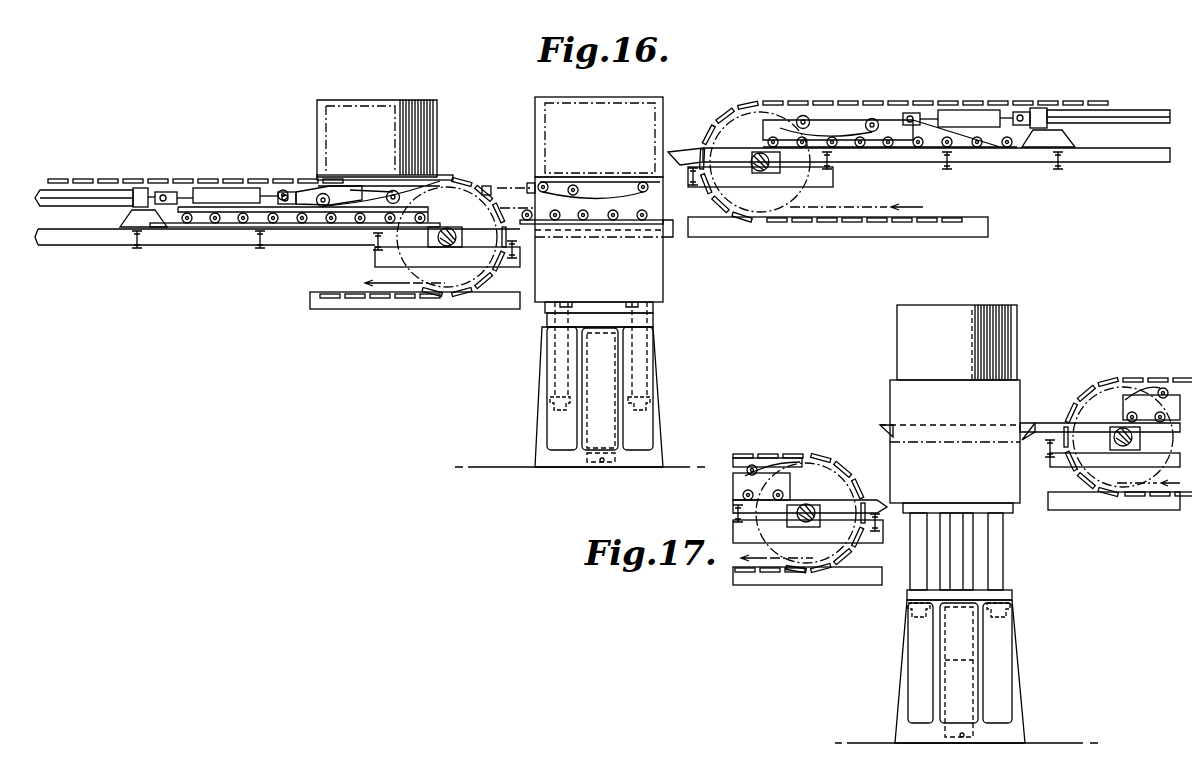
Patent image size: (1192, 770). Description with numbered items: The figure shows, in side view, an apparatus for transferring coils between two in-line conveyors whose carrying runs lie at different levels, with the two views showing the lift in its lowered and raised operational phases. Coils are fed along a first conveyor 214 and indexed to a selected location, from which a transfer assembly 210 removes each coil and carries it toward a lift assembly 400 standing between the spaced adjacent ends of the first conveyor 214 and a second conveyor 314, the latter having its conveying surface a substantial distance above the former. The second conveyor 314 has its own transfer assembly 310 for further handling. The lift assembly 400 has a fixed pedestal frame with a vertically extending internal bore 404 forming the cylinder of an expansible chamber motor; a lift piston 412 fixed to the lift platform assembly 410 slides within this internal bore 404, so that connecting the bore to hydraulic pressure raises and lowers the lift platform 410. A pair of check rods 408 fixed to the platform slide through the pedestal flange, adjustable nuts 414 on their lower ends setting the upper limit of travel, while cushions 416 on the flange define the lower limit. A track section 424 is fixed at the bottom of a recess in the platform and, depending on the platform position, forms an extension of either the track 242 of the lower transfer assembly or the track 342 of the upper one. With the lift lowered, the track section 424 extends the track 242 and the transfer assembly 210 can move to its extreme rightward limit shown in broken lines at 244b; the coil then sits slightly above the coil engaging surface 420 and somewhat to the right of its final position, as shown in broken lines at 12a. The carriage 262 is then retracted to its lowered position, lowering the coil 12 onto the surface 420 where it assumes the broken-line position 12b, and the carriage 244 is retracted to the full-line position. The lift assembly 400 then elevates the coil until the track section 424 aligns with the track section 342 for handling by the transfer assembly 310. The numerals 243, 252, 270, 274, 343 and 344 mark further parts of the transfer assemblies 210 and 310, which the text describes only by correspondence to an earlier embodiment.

In FIG. 17, the coil 12 is at (1017, 319).
In FIG. 16, the coil position 12a is at (664, 107).
In FIG. 16, the coil position 12b is at (630, 99).
In FIG. 16, the transfer assembly 210 is at (260, 222).
In FIG. 17, the transfer assembly 210 is at (725, 491).
In FIG. 16, the first conveyor 214 is at (188, 173).
In FIG. 17, the first conveyor 214 is at (772, 446).
In FIG. 16, the track 242 is at (302, 236).
In FIG. 17, the track 242 is at (880, 518).
In FIG. 16, the track 243 is at (200, 228).
In FIG. 17, the track 243 is at (870, 499).
In FIG. 16, the carriage 244 is at (349, 222).
In FIG. 16, the carriage position 244b is at (655, 206).
In FIG. 16, the rail 252 is at (96, 190).
In FIG. 16, the carriage 262 is at (338, 186).
In FIG. 16, the pivot link 270 is at (297, 182).
In FIG. 16, the cylinder 274 is at (224, 189).
In FIG. 16, the transfer assembly 310 is at (937, 147).
In FIG. 17, the transfer assembly 310 is at (1156, 386).
In FIG. 16, the second conveyor 314 is at (982, 101).
In FIG. 17, the second conveyor 314 is at (1131, 369).
In FIG. 16, the track 342 is at (869, 163).
In FIG. 17, the track 342 is at (1047, 435).
In FIG. 16, the rail end 343 is at (697, 151).
In FIG. 17, the rail end 343 is at (1053, 422).
In FIG. 16, the carriage frame 344 is at (767, 132).
In FIG. 16, the lift assembly 400 is at (666, 349).
In FIG. 17, the lift assembly 400 is at (1028, 649).
In FIG. 16, the internal bore 404 is at (612, 429).
In FIG. 17, the internal bore 404 is at (970, 691).
In FIG. 16, the check rods 408 is at (556, 362).
In FIG. 17, the check rods 408 is at (1003, 533).
In FIG. 16, the lift platform assembly 410 is at (612, 276).
In FIG. 17, the lift platform assembly 410 is at (970, 414).
In FIG. 16, the lift piston 412 is at (600, 376).
In FIG. 17, the lift piston 412 is at (973, 559).
In FIG. 16, the adjustable nuts 414 is at (550, 408).
In FIG. 17, the adjustable nuts 414 is at (908, 615).
In FIG. 16, the cushions 416 is at (547, 315).
In FIG. 17, the cushions 416 is at (908, 592).
In FIG. 16, the coil engaging surface 420 is at (598, 176).
In FIG. 16, the track section 424 is at (522, 236).
In FIG. 17, the track section 424 is at (1022, 422).